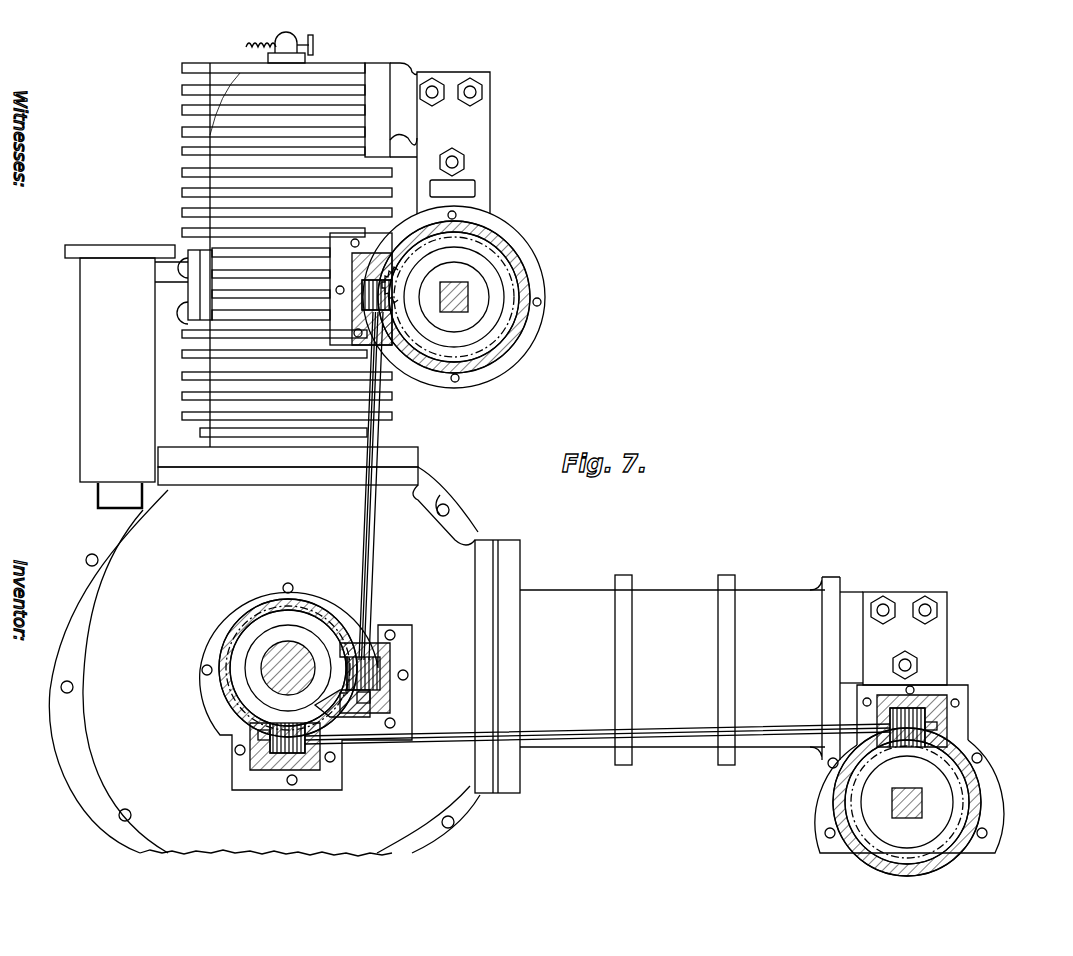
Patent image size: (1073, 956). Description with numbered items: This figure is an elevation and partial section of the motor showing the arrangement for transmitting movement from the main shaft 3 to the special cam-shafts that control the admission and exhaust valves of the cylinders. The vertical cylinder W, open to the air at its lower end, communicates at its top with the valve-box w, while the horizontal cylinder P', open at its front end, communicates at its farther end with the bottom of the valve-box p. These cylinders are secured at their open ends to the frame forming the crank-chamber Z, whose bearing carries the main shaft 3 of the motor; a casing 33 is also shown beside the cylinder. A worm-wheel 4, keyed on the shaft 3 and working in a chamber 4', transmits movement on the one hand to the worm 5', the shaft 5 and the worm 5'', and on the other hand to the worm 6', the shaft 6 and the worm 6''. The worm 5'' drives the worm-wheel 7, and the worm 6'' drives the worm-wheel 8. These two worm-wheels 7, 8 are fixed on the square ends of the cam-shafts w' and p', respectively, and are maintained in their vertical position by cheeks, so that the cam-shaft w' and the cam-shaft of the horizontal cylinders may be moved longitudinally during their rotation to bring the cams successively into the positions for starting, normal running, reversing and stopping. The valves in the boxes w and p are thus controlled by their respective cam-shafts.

The vertical cylinder W is at (270, 187).
The valve-box w is at (440, 138).
The cam-shaft w' is at (498, 297).
The worm-wheel 7 is at (405, 277).
The worm 5'' is at (379, 314).
The shaft 5 is at (378, 486).
The worm 5' is at (389, 678).
The box casing 33 is at (120, 376).
The crank-chamber Z is at (264, 661).
The main shaft 3 is at (267, 670).
The worm-wheel 4 is at (306, 686).
The chamber 4' is at (288, 652).
The worm 6' is at (262, 751).
The shaft 6 is at (597, 726).
The worm 6'' is at (939, 722).
The horizontal cylinder P' is at (748, 694).
The valve-box p is at (905, 638).
The worm-wheel 8 is at (880, 750).